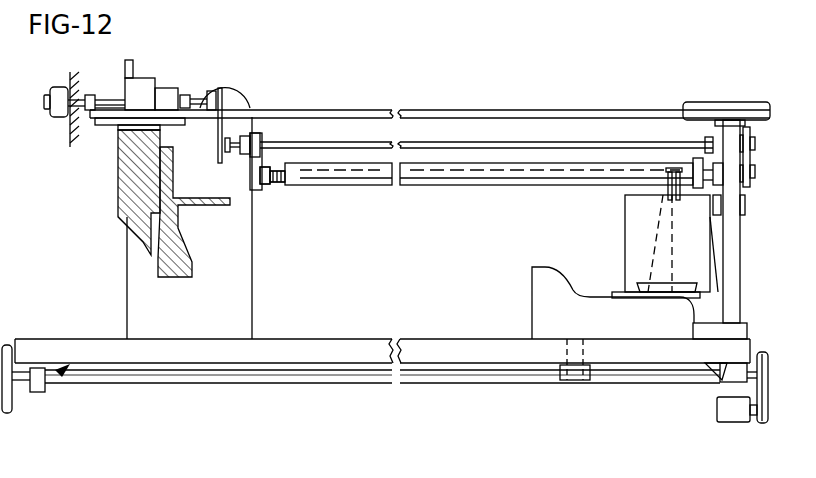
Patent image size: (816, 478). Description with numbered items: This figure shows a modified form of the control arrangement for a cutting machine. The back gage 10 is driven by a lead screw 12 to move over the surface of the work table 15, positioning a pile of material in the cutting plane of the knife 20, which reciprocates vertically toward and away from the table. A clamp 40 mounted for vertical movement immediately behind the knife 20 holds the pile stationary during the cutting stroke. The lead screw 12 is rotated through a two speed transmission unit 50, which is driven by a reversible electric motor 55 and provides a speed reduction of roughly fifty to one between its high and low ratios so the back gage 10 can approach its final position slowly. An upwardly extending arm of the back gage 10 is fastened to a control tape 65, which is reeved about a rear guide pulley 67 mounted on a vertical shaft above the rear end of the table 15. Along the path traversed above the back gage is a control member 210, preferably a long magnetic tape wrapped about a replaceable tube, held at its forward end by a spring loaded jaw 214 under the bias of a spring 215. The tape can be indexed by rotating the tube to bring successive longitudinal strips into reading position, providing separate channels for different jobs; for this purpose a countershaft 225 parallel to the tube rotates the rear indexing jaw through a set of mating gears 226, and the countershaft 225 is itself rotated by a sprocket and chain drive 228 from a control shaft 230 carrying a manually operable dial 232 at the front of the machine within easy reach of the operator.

The back gage 10 is at (532, 296).
The lead screw 12 is at (511, 384).
The work table 15 is at (407, 330).
The knife 20 is at (118, 198).
The clamp 40 is at (183, 278).
The two speed transmission unit 50 is at (767, 432).
The reversible electric motor 55 is at (729, 423).
The control tape 65 is at (570, 109).
The rear guide pulley 67 is at (738, 101).
The control member 210 is at (462, 190).
The spring loaded jaw 214 is at (288, 184).
The spring 215 is at (270, 186).
The countershaft 225 is at (478, 141).
The mating gears 226 is at (756, 157).
The sprocket and chain drive 228 is at (229, 99).
The control shaft 230 is at (203, 99).
The manually operable dial 232 is at (39, 94).